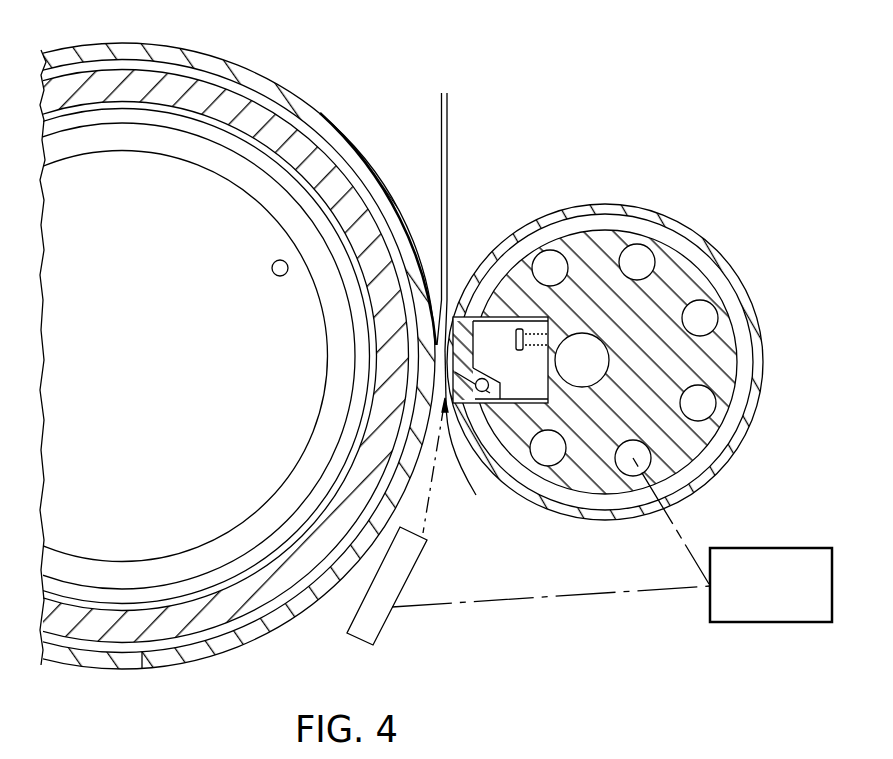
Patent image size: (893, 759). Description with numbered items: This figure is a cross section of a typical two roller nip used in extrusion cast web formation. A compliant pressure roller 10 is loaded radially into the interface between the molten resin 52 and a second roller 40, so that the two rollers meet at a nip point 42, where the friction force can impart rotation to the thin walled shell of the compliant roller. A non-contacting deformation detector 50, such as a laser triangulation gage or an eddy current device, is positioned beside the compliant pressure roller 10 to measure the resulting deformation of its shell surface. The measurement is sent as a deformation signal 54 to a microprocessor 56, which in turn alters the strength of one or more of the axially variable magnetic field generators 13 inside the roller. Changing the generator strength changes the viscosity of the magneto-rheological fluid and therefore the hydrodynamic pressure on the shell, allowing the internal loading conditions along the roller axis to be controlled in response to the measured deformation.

The compliant pressure roller 10 is at (542, 215).
The axially variable magnetic field generator 13 is at (604, 350).
The second roller 40 is at (442, 352).
The nip point 42 is at (459, 441).
The non-contacting deformation detector 50 is at (410, 563).
The molten resin 52 is at (446, 162).
The deformation signal 54 is at (573, 596).
The microprocessor 56 is at (757, 548).